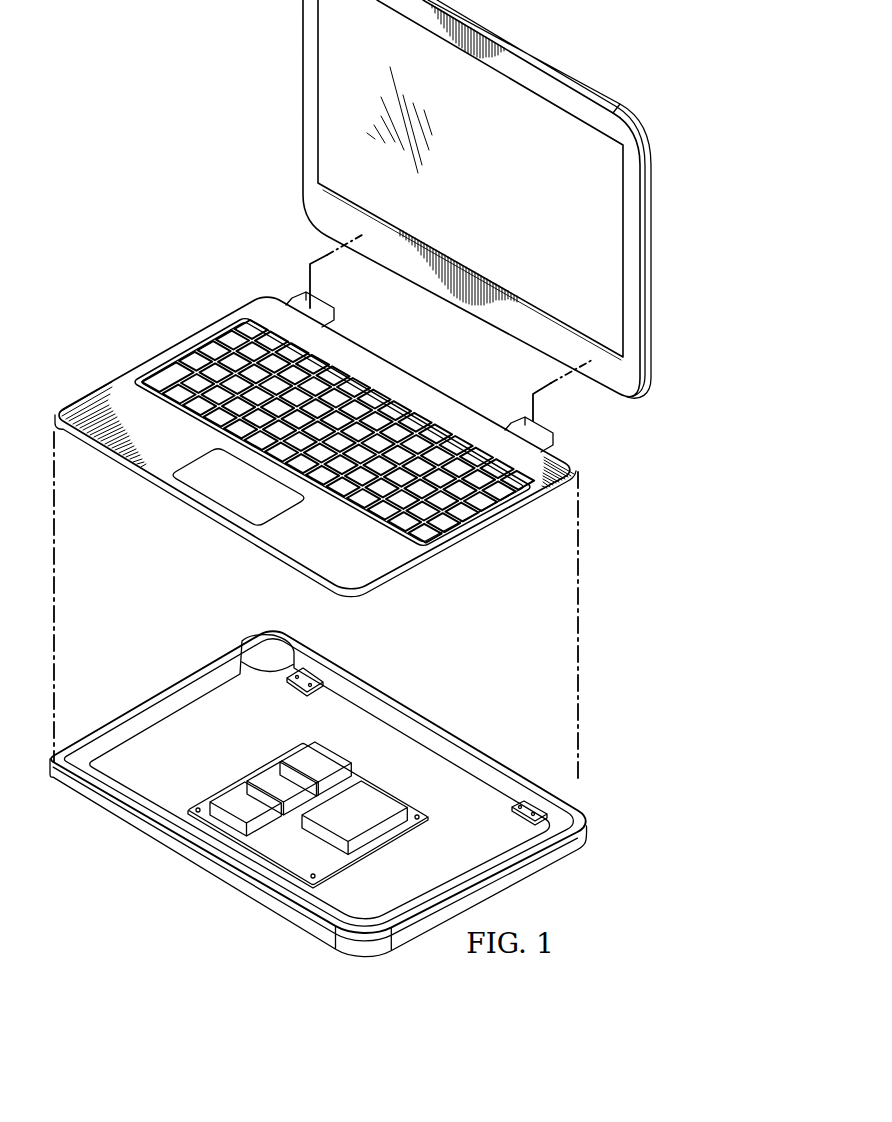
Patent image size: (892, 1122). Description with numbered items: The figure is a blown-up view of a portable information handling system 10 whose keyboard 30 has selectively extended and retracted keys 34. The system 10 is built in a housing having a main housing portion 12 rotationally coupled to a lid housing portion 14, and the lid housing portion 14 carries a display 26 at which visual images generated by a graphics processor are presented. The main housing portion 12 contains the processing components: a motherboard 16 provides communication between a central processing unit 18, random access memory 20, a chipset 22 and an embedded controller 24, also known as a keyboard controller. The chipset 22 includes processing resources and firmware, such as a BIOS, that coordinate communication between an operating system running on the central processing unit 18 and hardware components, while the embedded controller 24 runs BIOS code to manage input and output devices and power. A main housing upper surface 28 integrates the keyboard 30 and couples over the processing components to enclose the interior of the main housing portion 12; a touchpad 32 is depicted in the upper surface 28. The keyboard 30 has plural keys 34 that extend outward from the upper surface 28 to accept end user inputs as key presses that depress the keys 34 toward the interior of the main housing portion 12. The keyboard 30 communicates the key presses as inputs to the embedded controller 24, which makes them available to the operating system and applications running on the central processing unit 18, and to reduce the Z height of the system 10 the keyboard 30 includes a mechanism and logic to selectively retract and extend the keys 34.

The portable information handling system 10 is at (137, 58).
The main housing portion 12 is at (120, 834).
The lid housing portion 14 is at (655, 271).
The motherboard 16 is at (290, 857).
The central processing unit 18 is at (262, 778).
The random access memory 20 is at (230, 797).
The chipset 22 is at (323, 765).
The embedded controller 24 is at (380, 800).
The display 26 is at (497, 36).
The main housing upper surface 28 is at (226, 312).
The keyboard 30 is at (415, 405).
The touchpad 32 is at (221, 494).
The keys 34 is at (190, 360).